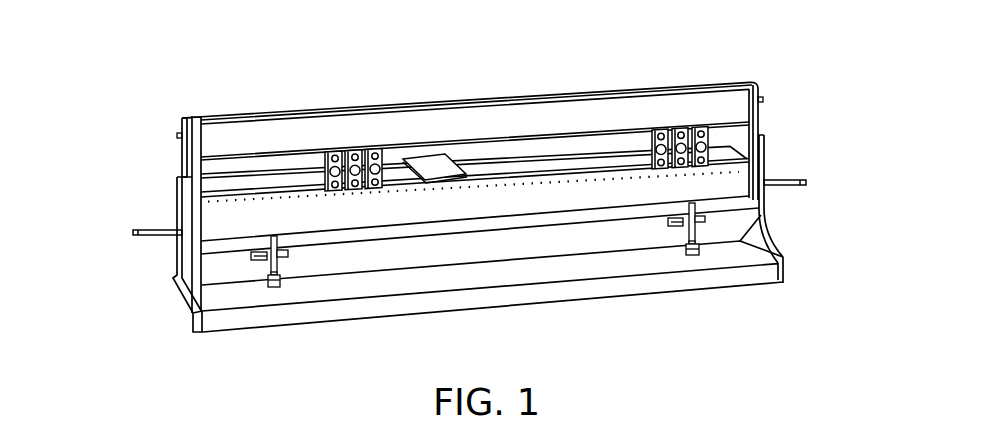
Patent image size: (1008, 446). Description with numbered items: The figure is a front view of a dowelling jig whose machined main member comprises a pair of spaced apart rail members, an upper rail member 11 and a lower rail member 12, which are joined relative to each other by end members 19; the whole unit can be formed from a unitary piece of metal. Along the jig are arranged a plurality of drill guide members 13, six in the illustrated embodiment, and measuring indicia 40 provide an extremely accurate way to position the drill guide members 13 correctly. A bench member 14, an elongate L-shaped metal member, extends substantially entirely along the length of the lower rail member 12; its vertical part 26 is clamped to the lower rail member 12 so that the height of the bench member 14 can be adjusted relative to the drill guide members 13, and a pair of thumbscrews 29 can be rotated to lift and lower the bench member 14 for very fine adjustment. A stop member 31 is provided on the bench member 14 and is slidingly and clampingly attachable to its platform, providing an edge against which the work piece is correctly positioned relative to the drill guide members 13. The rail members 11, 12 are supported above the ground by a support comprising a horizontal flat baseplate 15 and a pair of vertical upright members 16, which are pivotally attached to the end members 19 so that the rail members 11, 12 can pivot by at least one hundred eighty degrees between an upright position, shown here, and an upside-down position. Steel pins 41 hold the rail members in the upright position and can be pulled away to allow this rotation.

The upper rail member 11 is at (361, 107).
The lower rail member 12 is at (235, 223).
The drill guide members 13 is at (323, 161).
The bench member 14 is at (261, 171).
The baseplate 15 is at (392, 318).
The vertical upright members 16 is at (178, 266).
The end members 19 is at (182, 160).
The vertical part 26 is at (561, 226).
The thumbscrews 29 is at (277, 289).
The stop member 31 is at (438, 158).
The measuring indicia 40 is at (532, 184).
The steel pins 41 is at (133, 232).